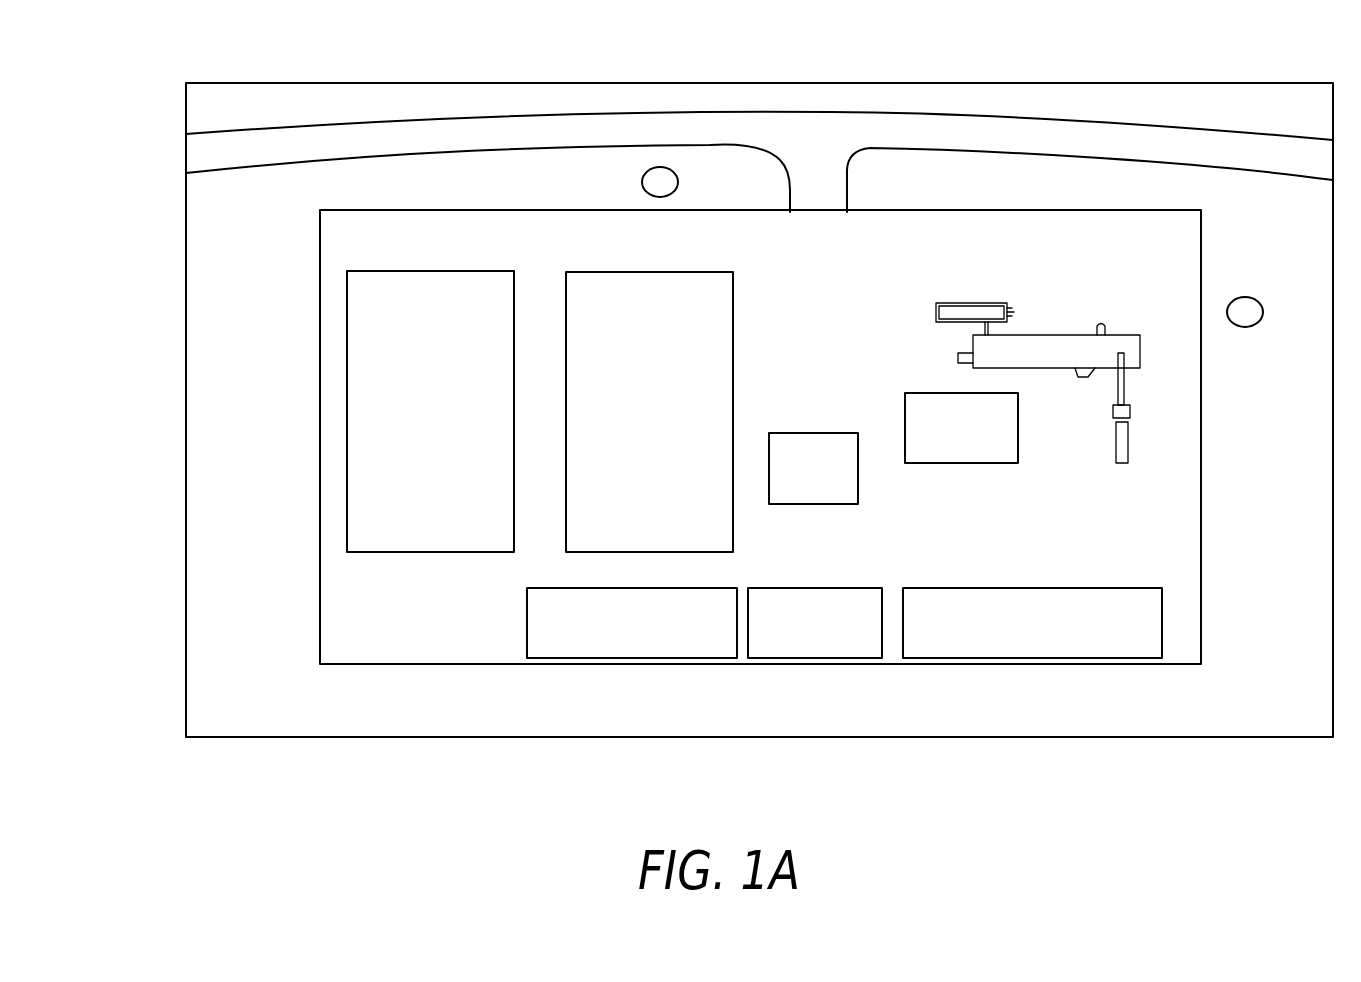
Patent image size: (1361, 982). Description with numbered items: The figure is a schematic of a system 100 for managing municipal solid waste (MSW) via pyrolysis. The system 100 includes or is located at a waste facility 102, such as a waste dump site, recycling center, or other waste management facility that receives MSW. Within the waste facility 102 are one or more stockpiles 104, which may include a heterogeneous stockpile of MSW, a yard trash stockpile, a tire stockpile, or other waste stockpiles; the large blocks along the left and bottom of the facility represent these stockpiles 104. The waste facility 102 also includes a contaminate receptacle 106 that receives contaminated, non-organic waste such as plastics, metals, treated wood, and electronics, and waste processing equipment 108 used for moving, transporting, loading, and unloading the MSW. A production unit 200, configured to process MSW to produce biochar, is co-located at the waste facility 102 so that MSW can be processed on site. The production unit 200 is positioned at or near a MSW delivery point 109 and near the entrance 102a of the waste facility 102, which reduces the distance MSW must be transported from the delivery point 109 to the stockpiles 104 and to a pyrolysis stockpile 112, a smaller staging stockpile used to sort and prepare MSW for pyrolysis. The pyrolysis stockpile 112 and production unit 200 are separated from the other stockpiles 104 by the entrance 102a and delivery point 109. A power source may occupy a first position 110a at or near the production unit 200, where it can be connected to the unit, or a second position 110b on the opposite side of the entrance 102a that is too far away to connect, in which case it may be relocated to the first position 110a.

The system 100 is at (150, 135).
The waste facility 102 is at (280, 554).
The entrance 102a is at (818, 165).
The stockpiles 104 is at (345, 347).
The contaminate receptacle 106 is at (815, 660).
The waste processing equipment 108 is at (617, 660).
The delivery point 109 is at (800, 432).
The first position 110a is at (1263, 309).
The second position 110b is at (641, 176).
The pyrolysis stockpile 112 is at (920, 392).
The production unit 200 is at (1099, 304).